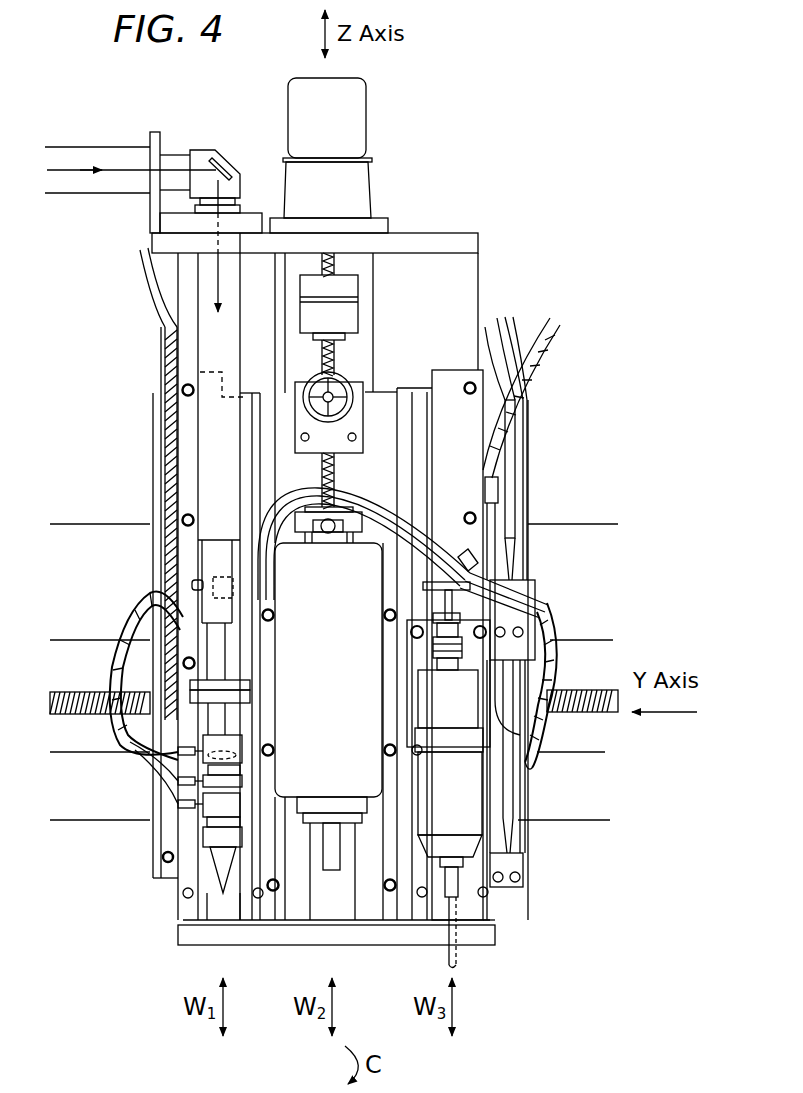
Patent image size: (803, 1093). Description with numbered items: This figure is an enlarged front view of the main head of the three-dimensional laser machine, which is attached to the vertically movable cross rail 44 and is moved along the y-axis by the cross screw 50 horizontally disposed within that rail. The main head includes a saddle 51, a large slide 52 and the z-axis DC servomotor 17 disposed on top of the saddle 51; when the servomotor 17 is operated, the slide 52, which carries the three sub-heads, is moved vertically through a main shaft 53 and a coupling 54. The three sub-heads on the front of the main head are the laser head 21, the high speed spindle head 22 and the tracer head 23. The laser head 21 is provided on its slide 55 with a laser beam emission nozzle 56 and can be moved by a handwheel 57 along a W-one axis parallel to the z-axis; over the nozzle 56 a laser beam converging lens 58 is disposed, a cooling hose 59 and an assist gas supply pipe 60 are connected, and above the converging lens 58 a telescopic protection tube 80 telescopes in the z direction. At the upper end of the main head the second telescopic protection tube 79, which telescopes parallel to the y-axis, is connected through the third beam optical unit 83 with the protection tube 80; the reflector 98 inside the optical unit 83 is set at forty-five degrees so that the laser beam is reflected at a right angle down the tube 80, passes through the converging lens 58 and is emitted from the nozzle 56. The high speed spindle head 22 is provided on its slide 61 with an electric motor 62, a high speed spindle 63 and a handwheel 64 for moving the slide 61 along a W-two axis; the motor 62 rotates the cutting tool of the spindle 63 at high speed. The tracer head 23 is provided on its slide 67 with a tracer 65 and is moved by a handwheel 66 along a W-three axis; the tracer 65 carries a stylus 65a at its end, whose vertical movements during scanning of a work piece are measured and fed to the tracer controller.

The z-axis DC servomotor 17 is at (362, 107).
The second telescopic protection tube 79 is at (88, 150).
The third beam optical unit 83 is at (200, 150).
The reflector 98 is at (228, 158).
The saddle 51 is at (462, 236).
The large slide 52 is at (417, 382).
The main shaft 53 is at (320, 263).
The coupling 54 is at (312, 318).
The handwheel 64 is at (312, 384).
The third telescopic protection tube 80 is at (203, 343).
The cross rail 44 is at (98, 536).
The slide 61 is at (392, 484).
The handwheel 57 is at (192, 586).
The slide 55 is at (193, 644).
The handwheel 66 is at (480, 572).
The slide 67 is at (500, 650).
The cross screw 50 is at (586, 694).
The electric motor 62 is at (364, 745).
The high speed spindle 63 is at (333, 866).
The tracer 65 is at (466, 817).
The stylus 65a is at (460, 962).
The laser beam converging lens 58 is at (188, 760).
The cooling hose 59 is at (174, 779).
The assist gas supply pipe 60 is at (178, 807).
The laser head 21 is at (148, 857).
The laser beam emission nozzle 56 is at (220, 868).
The tracer head 23 is at (498, 906).
The high speed spindle head 22 is at (363, 932).